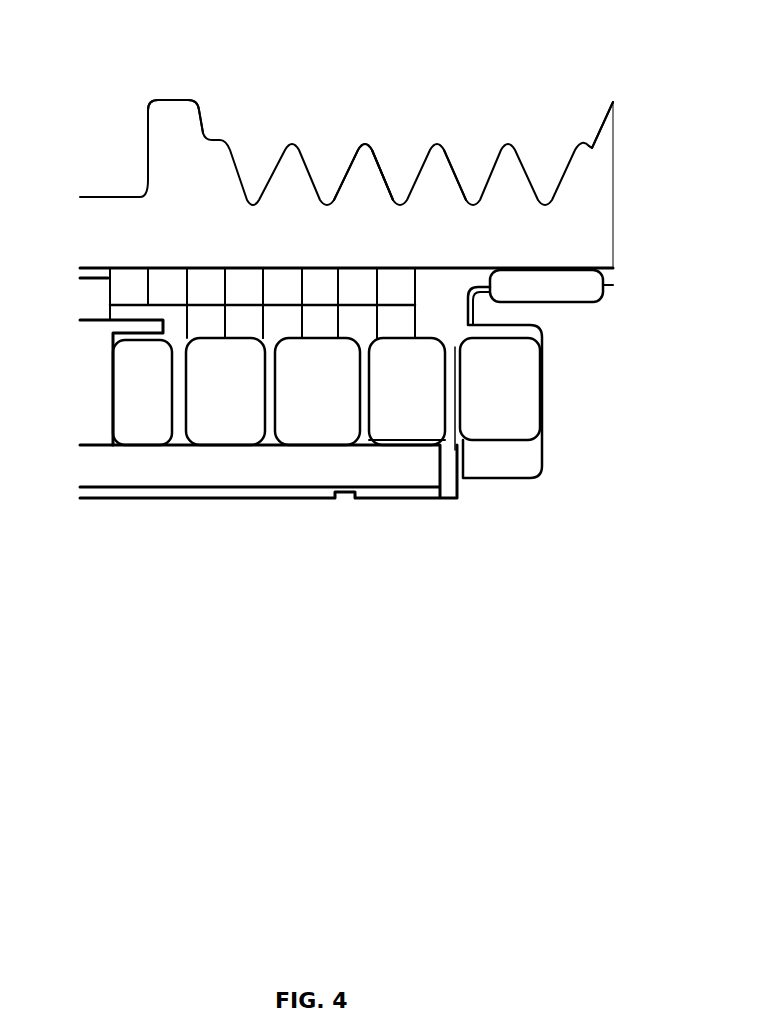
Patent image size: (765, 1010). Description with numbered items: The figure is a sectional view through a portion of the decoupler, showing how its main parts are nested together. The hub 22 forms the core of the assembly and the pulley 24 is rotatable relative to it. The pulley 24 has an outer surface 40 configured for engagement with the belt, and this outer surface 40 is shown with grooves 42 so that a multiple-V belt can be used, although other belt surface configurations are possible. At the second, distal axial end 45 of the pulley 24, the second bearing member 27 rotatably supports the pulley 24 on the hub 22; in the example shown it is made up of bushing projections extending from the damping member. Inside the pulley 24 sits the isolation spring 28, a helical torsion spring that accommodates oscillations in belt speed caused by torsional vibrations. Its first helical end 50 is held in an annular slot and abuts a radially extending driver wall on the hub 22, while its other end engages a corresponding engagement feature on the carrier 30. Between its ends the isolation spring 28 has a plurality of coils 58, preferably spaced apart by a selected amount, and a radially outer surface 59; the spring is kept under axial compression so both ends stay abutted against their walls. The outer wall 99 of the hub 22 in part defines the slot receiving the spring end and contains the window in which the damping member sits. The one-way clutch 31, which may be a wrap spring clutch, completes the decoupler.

The hub 22 is at (112, 468).
The pulley 24 is at (178, 118).
The second bearing member 27 is at (565, 280).
The isolation spring 28 is at (416, 427).
The carrier 30 is at (97, 345).
The one-way clutch 31 is at (175, 282).
The outer surface 40 is at (365, 140).
The grooves 42 is at (452, 158).
The second axial end 45 is at (596, 155).
The first helical end 50 is at (518, 397).
The coils 58 is at (230, 412).
The radially outer surface 59 is at (240, 338).
The outer wall 99 is at (507, 327).